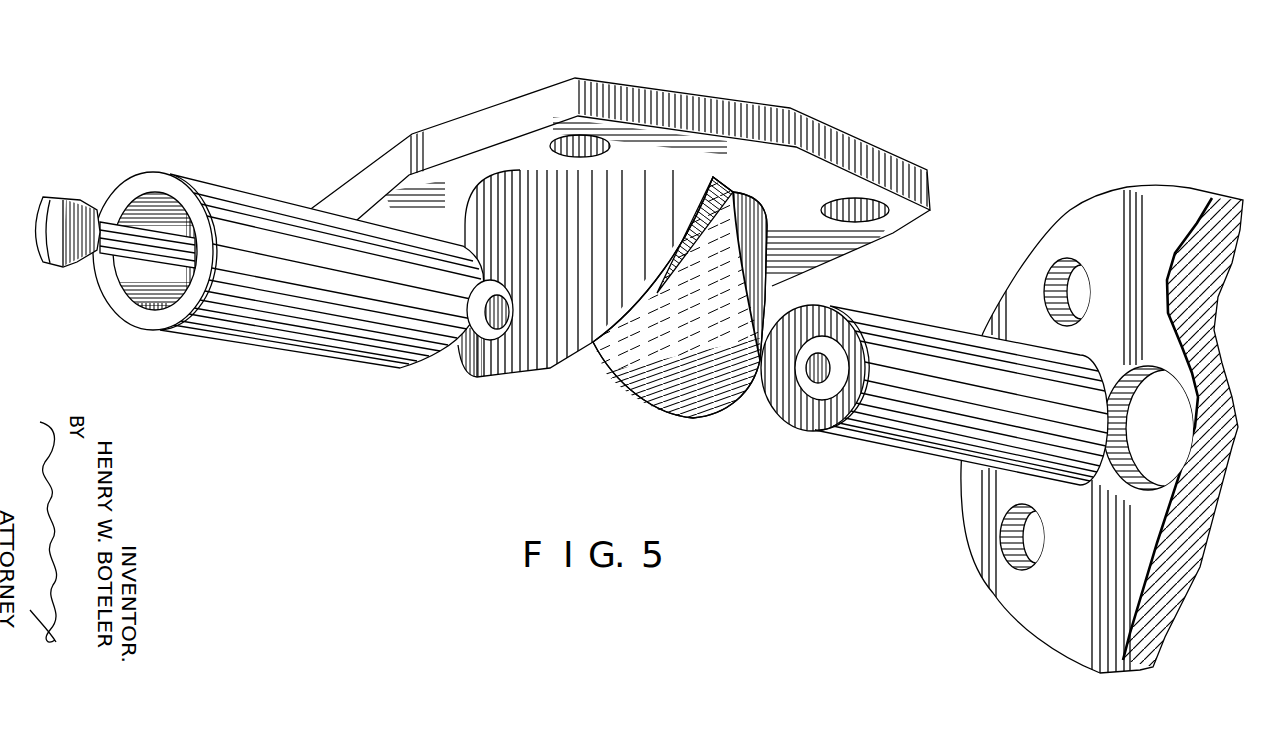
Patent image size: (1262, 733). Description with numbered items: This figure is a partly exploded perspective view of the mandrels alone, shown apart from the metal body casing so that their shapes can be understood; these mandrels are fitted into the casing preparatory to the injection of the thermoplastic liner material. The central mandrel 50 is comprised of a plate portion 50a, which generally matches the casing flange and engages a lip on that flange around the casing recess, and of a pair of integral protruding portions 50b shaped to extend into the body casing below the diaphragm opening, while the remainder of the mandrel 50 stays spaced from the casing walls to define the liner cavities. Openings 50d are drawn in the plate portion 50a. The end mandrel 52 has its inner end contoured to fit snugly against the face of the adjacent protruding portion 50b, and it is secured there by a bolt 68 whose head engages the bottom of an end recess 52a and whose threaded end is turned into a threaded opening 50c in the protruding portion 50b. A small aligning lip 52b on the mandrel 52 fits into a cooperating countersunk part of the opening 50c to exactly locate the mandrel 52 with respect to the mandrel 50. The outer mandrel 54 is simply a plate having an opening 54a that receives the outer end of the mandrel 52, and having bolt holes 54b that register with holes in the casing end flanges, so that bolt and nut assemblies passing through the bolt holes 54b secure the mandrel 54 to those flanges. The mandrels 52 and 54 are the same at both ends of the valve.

The mandrel 50 is at (651, 238).
The plate portion 50a is at (467, 133).
The protruding portions 50b is at (757, 296).
The threaded opening 50c is at (477, 327).
The mounting holes 50d is at (568, 110).
The mandrel 52 is at (600, 341).
The end recess 52a is at (142, 293).
The aligning lip 52b is at (820, 387).
The mandrel 54 is at (1077, 434).
The opening 54a is at (1113, 463).
The bolt holes 54b is at (1047, 291).
The bolt 68 is at (117, 270).